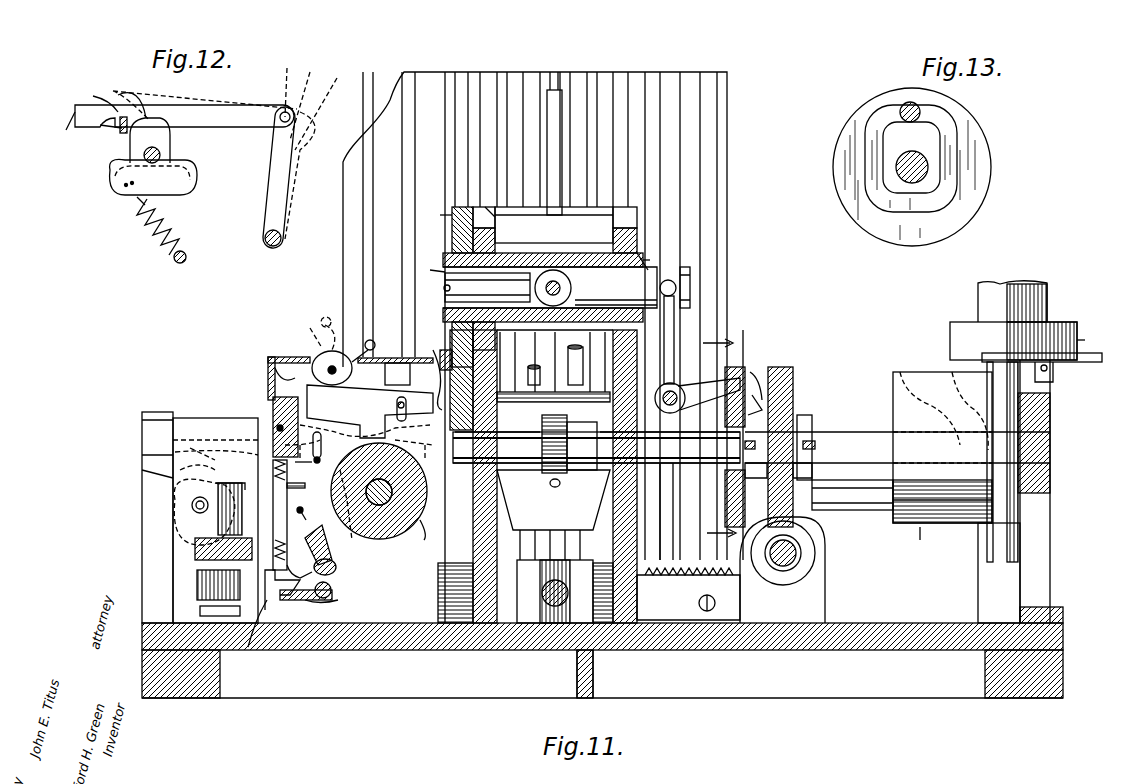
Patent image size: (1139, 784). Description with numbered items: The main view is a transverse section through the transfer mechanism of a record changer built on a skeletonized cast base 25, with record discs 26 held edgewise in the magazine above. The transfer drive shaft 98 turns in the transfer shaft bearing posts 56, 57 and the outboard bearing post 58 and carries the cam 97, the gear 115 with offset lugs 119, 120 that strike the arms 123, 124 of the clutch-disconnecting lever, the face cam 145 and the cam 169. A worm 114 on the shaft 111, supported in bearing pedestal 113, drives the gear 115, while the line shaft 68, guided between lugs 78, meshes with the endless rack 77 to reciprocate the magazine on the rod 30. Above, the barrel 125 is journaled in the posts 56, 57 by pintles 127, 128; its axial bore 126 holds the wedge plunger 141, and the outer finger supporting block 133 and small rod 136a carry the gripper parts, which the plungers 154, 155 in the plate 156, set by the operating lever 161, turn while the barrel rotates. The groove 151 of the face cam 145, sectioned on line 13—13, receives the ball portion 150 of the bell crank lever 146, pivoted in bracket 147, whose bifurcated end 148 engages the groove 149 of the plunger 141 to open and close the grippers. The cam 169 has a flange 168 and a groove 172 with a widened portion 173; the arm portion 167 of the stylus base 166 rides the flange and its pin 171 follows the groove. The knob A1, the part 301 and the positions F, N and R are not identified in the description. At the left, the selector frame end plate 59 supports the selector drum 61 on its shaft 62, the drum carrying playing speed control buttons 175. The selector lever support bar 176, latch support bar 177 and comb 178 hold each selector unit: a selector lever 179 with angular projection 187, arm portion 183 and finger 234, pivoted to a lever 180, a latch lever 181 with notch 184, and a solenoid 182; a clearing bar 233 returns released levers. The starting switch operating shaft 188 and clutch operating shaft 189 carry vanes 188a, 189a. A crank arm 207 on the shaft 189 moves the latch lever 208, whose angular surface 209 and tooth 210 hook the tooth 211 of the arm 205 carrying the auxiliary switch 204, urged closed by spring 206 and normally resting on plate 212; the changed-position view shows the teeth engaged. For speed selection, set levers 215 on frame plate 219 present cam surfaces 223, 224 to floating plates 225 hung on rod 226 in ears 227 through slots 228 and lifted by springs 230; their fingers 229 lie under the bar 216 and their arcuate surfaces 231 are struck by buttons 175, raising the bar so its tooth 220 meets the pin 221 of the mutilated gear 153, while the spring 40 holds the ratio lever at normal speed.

In FIG. 11, the housing 26 is at (440, 92).
In FIG. 11, the bearing block 56 is at (460, 240).
In FIG. 11, the bearing block 57 is at (638, 230).
In FIG. 11, the key 153 is at (480, 210).
In FIG. 11, the pin 221 is at (446, 212).
In FIG. 11, the carriage 133 is at (554, 225).
In FIG. 11, the roller 136a is at (558, 280).
In FIG. 11, the shaft 141 is at (550, 280).
In FIG. 11, the bushing 128 is at (422, 270).
In FIG. 11, the bearing 125 is at (543, 316).
In FIG. 11, the plate 127 is at (645, 258).
In FIG. 11, the bracket 126 is at (650, 262).
In FIG. 11, the pin 149 is at (690, 270).
In FIG. 11, the knob 148 is at (676, 290).
In FIG. 11, the rod 146 is at (674, 335).
In FIG. 11, the bell crank 147 is at (660, 412).
In FIG. 11, the section line 13 is at (728, 446).
In FIG. 11, the pin 154 is at (519, 378).
In FIG. 11, the pin 155 is at (564, 368).
In FIG. 11, the bar 216 is at (555, 372).
In FIG. 11, the shaft 97 is at (545, 428).
In FIG. 13, the key 150 is at (905, 107).
In FIG. 11, the key 150 is at (760, 355).
In FIG. 11, the shaft 124 is at (670, 443).
In FIG. 13, the shaft 98 is at (903, 173).
In FIG. 11, the shaft 98 is at (508, 463).
In FIG. 11, the hole 156 is at (560, 485).
In FIG. 11, the funnel guide 161 is at (520, 545).
In FIG. 11, the bearing 68 is at (546, 591).
In FIG. 11, the rack 77 is at (589, 593).
In FIG. 11, the collar 120 is at (760, 412).
In FIG. 13, the sleeve 145 is at (990, 177).
In FIG. 11, the sleeve 145 is at (757, 365).
In FIG. 11, the wall 115 is at (790, 366).
In FIG. 11, the collar 119 is at (798, 420).
In FIG. 11, the key 123 is at (815, 445).
In FIG. 11, the shaft 30 is at (855, 495).
In FIG. 11, the drum 172 is at (985, 475).
In FIG. 11, the cam slot 173 is at (898, 380).
In FIG. 11, the cam slot 171 is at (970, 411).
In FIG. 11, the block 166 is at (950, 340).
In FIG. 11, the knob A1 is at (1047, 298).
In FIG. 11, the plate 167 is at (1096, 335).
In FIG. 11, the bracket 301 is at (1052, 380).
In FIG. 11, the frame wall 58 is at (1045, 520).
In FIG. 11, the block 168 is at (999, 573).
In FIG. 11, the post 169 is at (920, 540).
In FIG. 11, the bracket 113 is at (812, 600).
In FIG. 11, the bearing 114 is at (808, 548).
In FIG. 11, the shaft 111 is at (798, 560).
In FIG. 11, the base 25 is at (742, 690).
In FIG. 11, the pier 78 is at (612, 628).
In FIG. 11, the bracket 184 is at (253, 632).
In FIG. 11, the frame 59 is at (190, 416).
In FIG. 11, the bracket 219 is at (270, 360).
In FIG. 11, the spring 230 is at (276, 370).
In FIG. 11, the block 177 is at (276, 400).
In FIG. 11, the lever 181 is at (268, 425).
In FIG. 11, the cam 224 is at (320, 356).
In FIG. 11, the link 223 is at (308, 330).
In FIG. 11, the pin 215 is at (368, 340).
In FIG. 11, the bar 220 is at (426, 358).
In FIG. 11, the plate 225 is at (370, 411).
In FIG. 11, the slot 226 is at (380, 407).
In FIG. 11, the block 227 is at (398, 374).
In FIG. 11, the block 229 is at (438, 376).
In FIG. 11, the link 228 is at (365, 426).
In FIG. 11, the link 231 is at (359, 450).
In FIG. 11, the pin 233 is at (318, 432).
In FIG. 11, the pin 234 is at (309, 470).
In FIG. 11, the gear 175 is at (379, 491).
In FIG. 11, the shaft 62 is at (379, 500).
In FIG. 11, the hub 61 is at (415, 532).
In FIG. 11, the pin 187 is at (309, 498).
In FIG. 11, the lever 178 is at (315, 515).
In FIG. 11, the pawl 179 is at (326, 545).
In FIG. 12, the link 207 is at (275, 165).
In FIG. 11, the link 207 is at (356, 511).
In FIG. 11, the pivot 188a is at (344, 561).
In FIG. 11, the lever 188 is at (335, 570).
In FIG. 11, the pivot 180 is at (332, 590).
In FIG. 11, the bar 189a is at (305, 600).
In FIG. 12, the pivot 189 is at (280, 236).
In FIG. 11, the pivot 189 is at (331, 609).
In FIG. 11, the bracket 183 is at (282, 590).
In FIG. 11, the solenoid 176 is at (200, 560).
In FIG. 11, the coil 182 is at (198, 588).
In FIG. 12, the spring 211 is at (140, 110).
In FIG. 11, the spring 211 is at (190, 503).
In FIG. 12, the pin 212 is at (120, 128).
In FIG. 11, the pin 212 is at (178, 478).
In FIG. 12, the armature 204 is at (197, 176).
In FIG. 11, the armature 204 is at (175, 530).
In FIG. 12, the arm 208 is at (234, 110).
In FIG. 11, the arm 208 is at (215, 443).
In FIG. 12, the pin 210 is at (118, 112).
In FIG. 11, the pin 210 is at (196, 447).
In FIG. 12, the arm end 209 is at (76, 122).
In FIG. 11, the arm end 209 is at (150, 472).
In FIG. 13, the sleeve 151 is at (958, 146).
In FIG. 11, the sleeve 151 is at (712, 478).
In FIG. 12, the block 205 is at (165, 148).
In FIG. 12, the stop 40 is at (122, 130).
In FIG. 12, the spring 206 is at (172, 225).
In FIG. 12, the forward position F is at (285, 61).
In FIG. 12, the neutral position N is at (311, 63).
In FIG. 12, the reverse position R is at (335, 71).